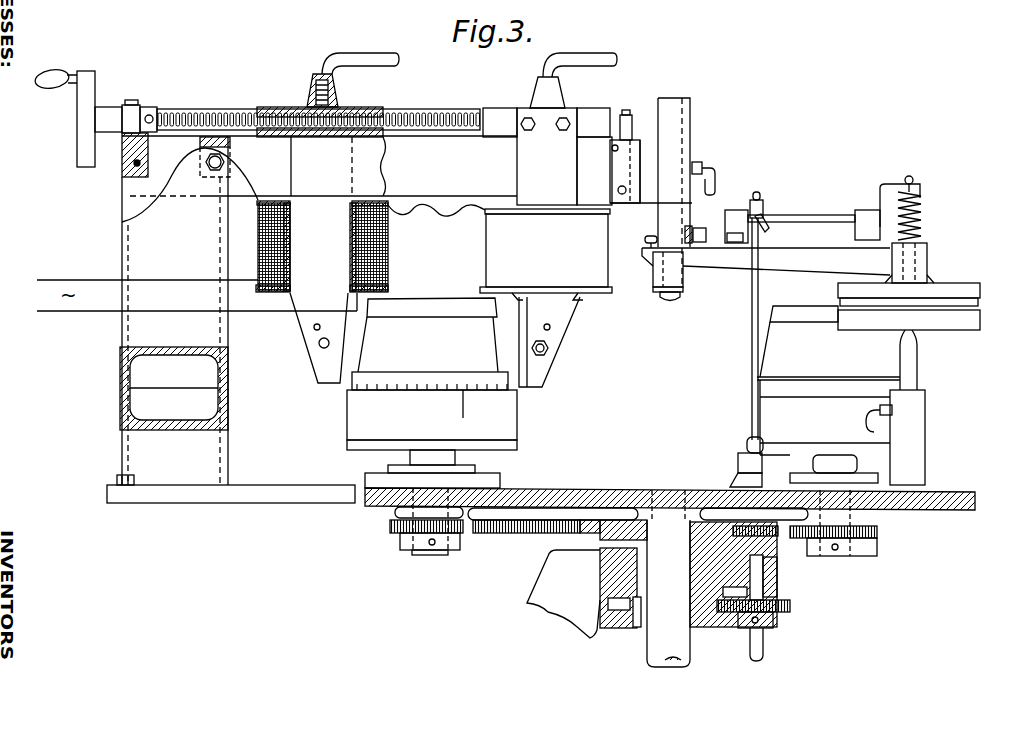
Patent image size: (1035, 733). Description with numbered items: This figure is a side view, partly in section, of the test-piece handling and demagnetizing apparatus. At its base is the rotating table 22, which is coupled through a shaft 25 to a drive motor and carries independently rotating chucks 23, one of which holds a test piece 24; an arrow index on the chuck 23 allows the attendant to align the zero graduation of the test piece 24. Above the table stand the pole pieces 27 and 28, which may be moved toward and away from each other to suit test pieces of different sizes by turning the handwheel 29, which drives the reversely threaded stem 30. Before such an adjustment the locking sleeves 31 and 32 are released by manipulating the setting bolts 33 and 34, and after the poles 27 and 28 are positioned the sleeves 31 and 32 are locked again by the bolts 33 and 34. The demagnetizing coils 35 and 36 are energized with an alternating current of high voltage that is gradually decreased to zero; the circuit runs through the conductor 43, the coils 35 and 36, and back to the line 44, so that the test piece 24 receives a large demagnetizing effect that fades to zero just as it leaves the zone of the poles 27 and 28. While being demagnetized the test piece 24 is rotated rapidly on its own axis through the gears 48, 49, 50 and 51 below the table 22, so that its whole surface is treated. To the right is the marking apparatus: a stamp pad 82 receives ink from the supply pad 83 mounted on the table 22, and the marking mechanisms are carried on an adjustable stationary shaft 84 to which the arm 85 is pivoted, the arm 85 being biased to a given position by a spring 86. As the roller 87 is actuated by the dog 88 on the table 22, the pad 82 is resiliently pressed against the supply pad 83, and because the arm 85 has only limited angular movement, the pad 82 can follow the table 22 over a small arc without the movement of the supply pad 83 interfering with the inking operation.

The rotating table 22 is at (975, 500).
The chuck 23 is at (517, 432).
The test piece 24 is at (783, 305).
The shaft 25 is at (647, 657).
The pole piece 27 is at (553, 366).
The pole piece 28 is at (313, 360).
The handwheel 29 is at (77, 152).
The reversely threaded stem 30 is at (218, 108).
The locking sleeve 31 is at (375, 107).
The locking sleeve 32 is at (500, 107).
The setting bolt 33 is at (400, 59).
The setting bolt 34 is at (618, 61).
The demagnetizing coil 35 is at (388, 275).
The demagnetizing coil 36 is at (485, 253).
The conductor 43 is at (75, 267).
The line 44 is at (70, 311).
The gear 48 is at (784, 620).
The gear 49 is at (718, 618).
The gear 50 is at (722, 523).
The gear 51 is at (876, 548).
The stamp pad 82 is at (982, 296).
The supply pad 83 is at (965, 330).
The adjustable stationary shaft 84 is at (690, 116).
The arm 85 is at (738, 277).
The spring 86 is at (688, 237).
The roller 87 is at (738, 462).
The dog 88 is at (738, 479).